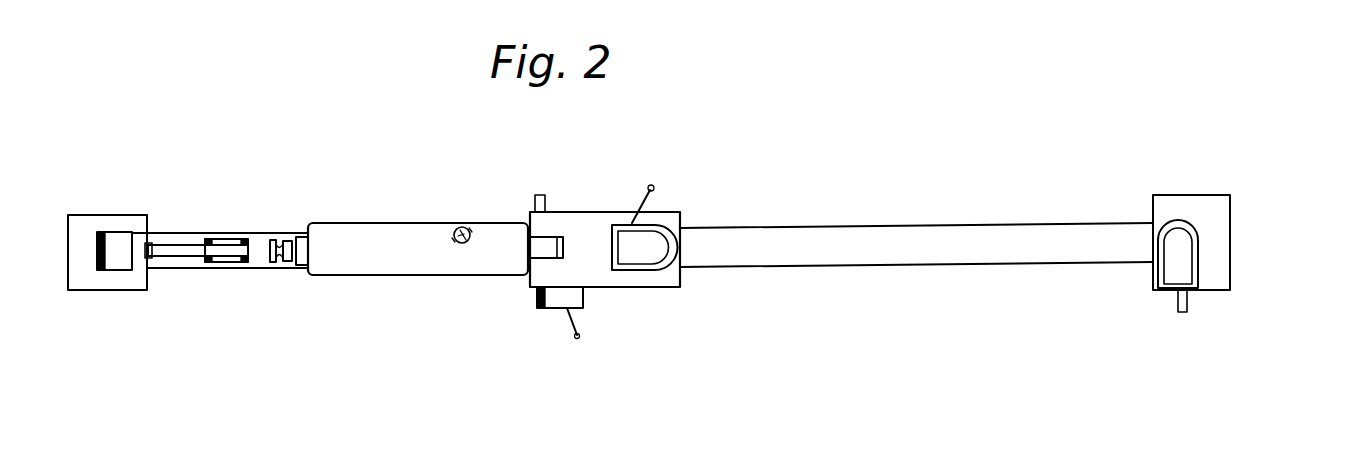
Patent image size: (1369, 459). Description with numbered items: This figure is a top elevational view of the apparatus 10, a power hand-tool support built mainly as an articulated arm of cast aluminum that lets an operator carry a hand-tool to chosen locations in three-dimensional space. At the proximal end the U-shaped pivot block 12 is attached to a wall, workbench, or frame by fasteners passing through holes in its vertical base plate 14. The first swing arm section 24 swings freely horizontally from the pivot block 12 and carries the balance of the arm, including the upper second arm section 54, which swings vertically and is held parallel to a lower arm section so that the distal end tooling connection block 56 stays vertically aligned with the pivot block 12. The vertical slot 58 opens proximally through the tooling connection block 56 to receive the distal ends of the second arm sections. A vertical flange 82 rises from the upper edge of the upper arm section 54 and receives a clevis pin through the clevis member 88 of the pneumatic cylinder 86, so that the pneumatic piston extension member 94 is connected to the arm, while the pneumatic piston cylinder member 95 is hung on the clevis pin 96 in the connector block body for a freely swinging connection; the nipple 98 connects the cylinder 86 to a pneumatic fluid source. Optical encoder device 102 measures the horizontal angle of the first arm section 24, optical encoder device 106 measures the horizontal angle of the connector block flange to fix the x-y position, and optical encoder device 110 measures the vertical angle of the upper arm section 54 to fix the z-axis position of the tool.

The apparatus 10 is at (687, 183).
The U-shaped pivot block 12 is at (1240, 243).
The vertical base plate 14 is at (1212, 215).
The first swing arm section 24 is at (885, 240).
The upper second arm section 54 is at (188, 262).
The distal end tooling connection block 56 is at (88, 213).
The vertical slot 58 is at (117, 247).
The vertical flange 82 is at (178, 253).
The pneumatic cylinder 86 is at (393, 247).
The clevis member 88 is at (255, 243).
The pneumatic piston extension member 94 is at (298, 240).
The pneumatic piston cylinder member 95 is at (543, 248).
The clevis pin 96 is at (542, 195).
The nipple 98 is at (467, 222).
The optical encoder device 102 is at (1182, 260).
The optical encoder device 106 is at (642, 252).
The optical encoder device 110 is at (563, 293).